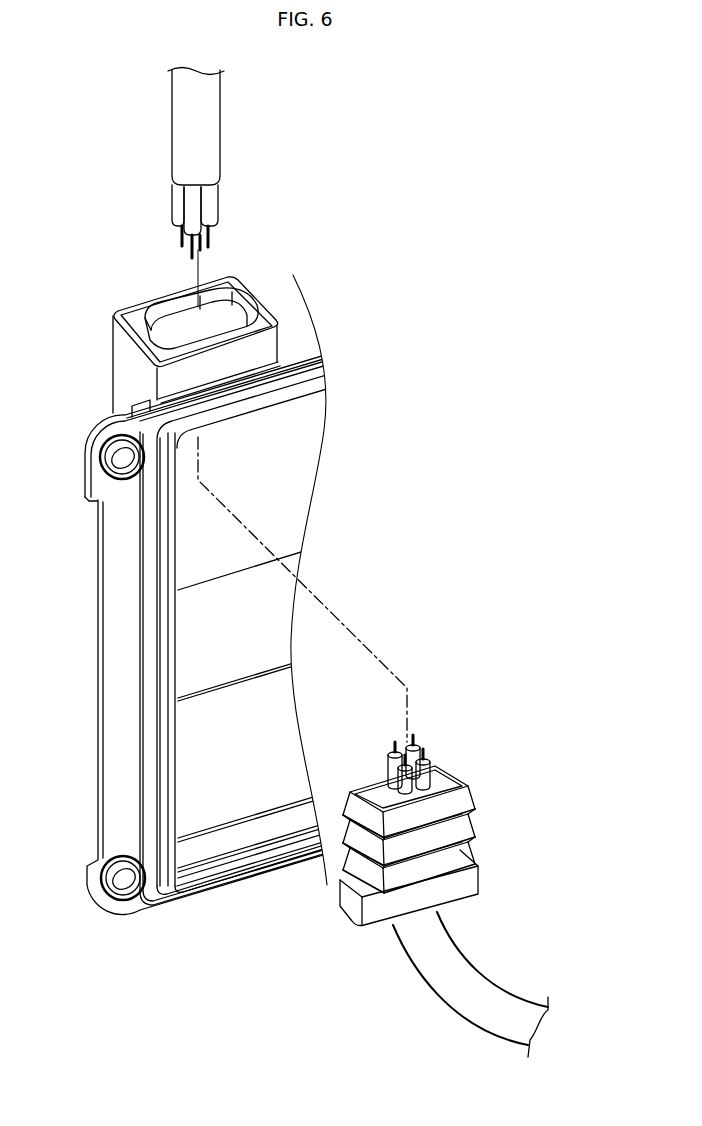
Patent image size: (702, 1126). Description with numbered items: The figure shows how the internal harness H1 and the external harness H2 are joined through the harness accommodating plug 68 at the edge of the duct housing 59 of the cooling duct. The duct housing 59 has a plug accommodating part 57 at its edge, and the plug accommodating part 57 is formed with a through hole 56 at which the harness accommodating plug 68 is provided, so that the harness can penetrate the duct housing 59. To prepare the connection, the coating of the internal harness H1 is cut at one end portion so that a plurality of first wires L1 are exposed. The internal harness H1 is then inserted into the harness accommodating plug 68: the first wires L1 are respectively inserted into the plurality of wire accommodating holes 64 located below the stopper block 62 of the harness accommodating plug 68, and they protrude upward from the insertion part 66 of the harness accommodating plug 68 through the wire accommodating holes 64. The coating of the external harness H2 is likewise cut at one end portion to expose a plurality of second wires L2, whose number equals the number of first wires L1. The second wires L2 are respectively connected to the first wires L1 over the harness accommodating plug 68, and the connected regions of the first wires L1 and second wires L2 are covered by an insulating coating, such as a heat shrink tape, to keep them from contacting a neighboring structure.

The through hole 56 is at (166, 316).
The plug accommodating part 57 is at (118, 367).
The duct housing 59 is at (100, 529).
The stopper block 62 is at (355, 900).
The wire accommodating holes 64 is at (378, 783).
The insertion part 66 is at (470, 810).
The harness accommodating plug 68 is at (426, 844).
The first wires L1 is at (424, 770).
The second wires L2 is at (214, 203).
The internal harness H1 is at (497, 993).
The external harness H2 is at (212, 111).